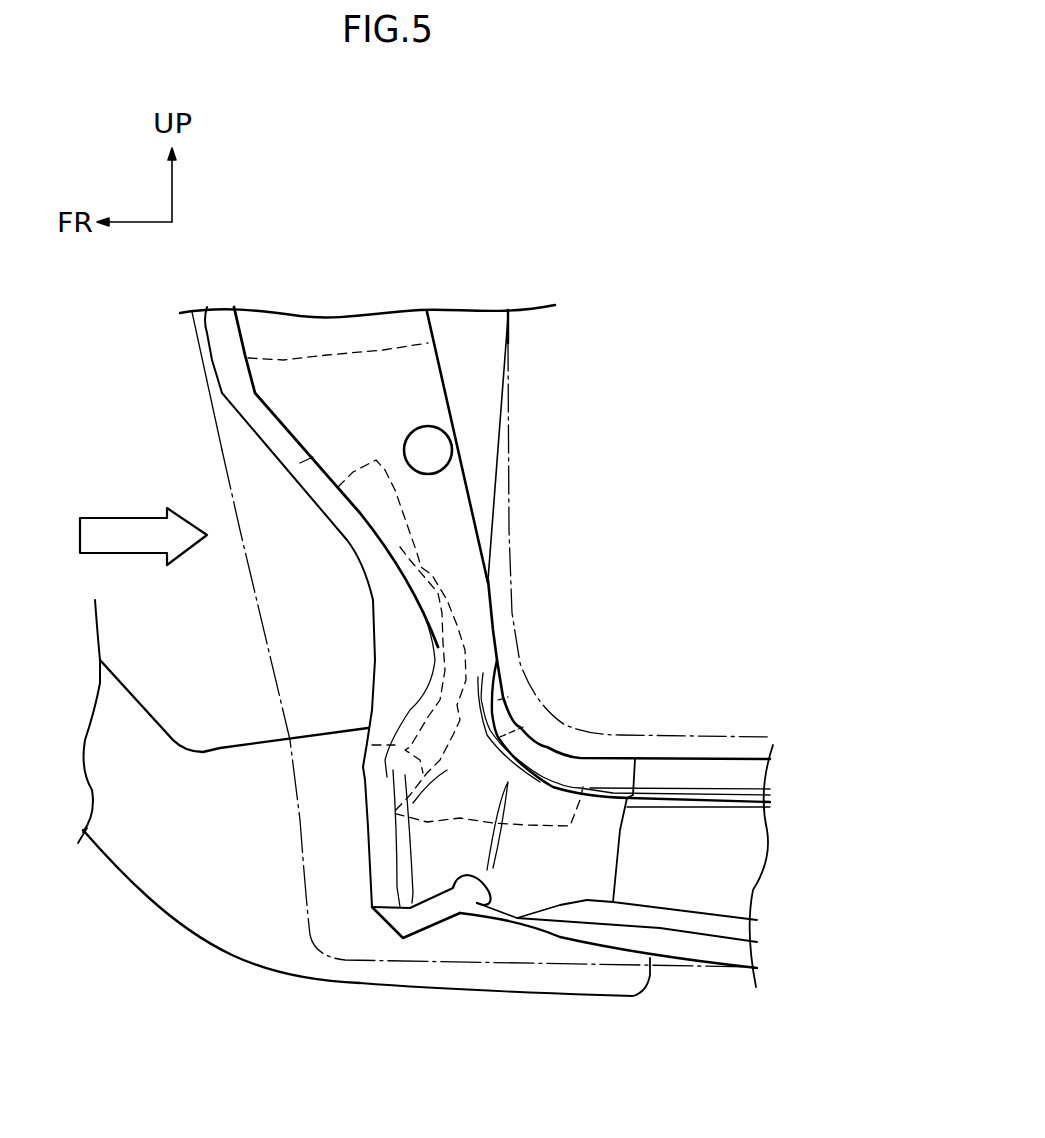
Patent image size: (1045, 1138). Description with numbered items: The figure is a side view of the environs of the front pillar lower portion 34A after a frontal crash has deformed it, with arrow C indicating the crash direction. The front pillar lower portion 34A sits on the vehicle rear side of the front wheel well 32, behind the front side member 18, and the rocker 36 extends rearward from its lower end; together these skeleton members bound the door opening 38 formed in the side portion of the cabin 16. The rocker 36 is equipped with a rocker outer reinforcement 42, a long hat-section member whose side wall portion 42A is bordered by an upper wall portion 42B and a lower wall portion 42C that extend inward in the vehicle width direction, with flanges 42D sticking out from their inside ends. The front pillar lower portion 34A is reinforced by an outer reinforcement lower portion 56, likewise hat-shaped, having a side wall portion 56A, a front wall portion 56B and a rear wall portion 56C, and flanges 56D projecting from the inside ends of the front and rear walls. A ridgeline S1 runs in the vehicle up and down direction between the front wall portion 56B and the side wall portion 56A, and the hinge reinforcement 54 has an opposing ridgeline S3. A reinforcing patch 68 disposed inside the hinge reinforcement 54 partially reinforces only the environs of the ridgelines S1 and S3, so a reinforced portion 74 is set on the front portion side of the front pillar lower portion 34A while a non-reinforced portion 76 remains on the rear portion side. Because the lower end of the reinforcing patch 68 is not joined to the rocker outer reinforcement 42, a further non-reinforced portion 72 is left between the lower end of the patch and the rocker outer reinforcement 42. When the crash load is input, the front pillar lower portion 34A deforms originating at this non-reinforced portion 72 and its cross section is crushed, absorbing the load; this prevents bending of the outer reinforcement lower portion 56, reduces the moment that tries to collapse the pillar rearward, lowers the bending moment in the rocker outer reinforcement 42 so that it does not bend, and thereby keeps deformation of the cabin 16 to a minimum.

The cabin 16 is at (705, 460).
The front side member 18 is at (142, 890).
The front wheel well 32 is at (237, 889).
The front pillar lower portion 34A is at (235, 424).
The rocker 36 is at (554, 961).
The door opening 38 is at (497, 493).
The rocker outer reinforcement 42 is at (680, 964).
The side wall portion 42A is at (730, 885).
The upper wall portion 42B is at (743, 793).
The lower wall portion 42C is at (730, 930).
The flange 42D is at (697, 780).
The hinge reinforcement 54 is at (300, 356).
The outer reinforcement lower portion 56 is at (494, 542).
The side wall portion 56A is at (375, 327).
The front wall portion 56B is at (430, 650).
The rear wall portion 56C is at (510, 700).
The flange 56D is at (220, 343).
The reinforcing patch 68 is at (444, 588).
The non-reinforced portion 72 is at (397, 765).
The reinforced portion 74 is at (398, 552).
The non-reinforced portion 76 is at (477, 618).
The ridgeline S1 is at (306, 461).
The ridgeline S3 is at (460, 427).
The arrow C is at (130, 555).